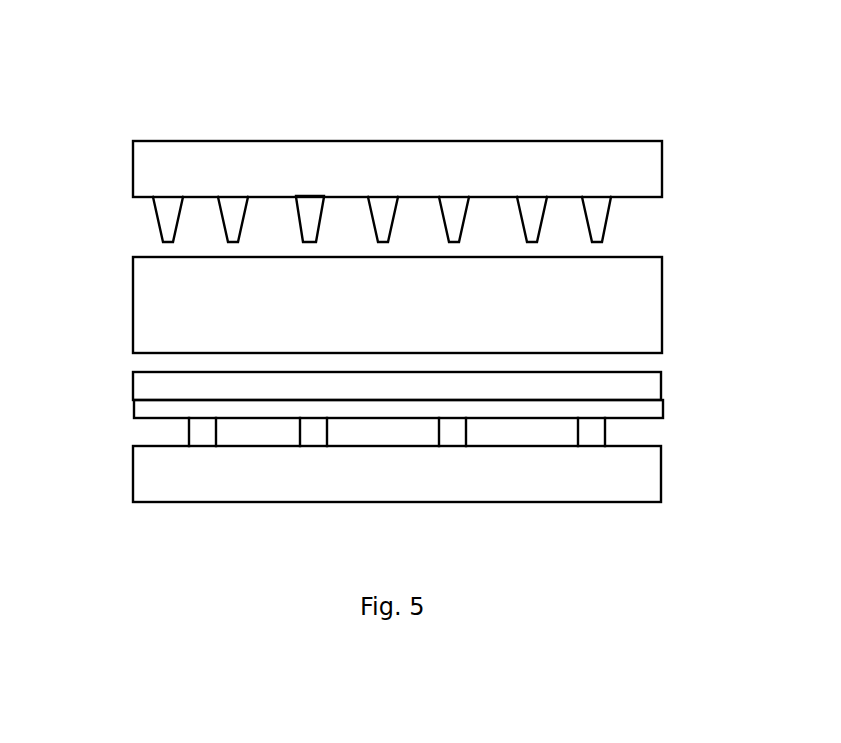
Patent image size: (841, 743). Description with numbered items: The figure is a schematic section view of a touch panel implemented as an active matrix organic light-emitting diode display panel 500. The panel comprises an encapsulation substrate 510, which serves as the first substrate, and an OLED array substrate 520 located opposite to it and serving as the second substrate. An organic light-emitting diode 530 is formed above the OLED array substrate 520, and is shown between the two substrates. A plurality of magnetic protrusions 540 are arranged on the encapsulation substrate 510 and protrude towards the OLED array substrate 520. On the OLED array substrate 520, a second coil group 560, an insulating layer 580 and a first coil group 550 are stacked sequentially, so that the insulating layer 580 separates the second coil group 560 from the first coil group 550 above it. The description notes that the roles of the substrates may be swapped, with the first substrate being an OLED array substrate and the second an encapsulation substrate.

The AMOLED display panel 500 is at (383, 23).
The encapsulation substrate 510 is at (588, 158).
The OLED array substrate 520 is at (455, 480).
The organic light-emitting diode 530 is at (163, 287).
The magnetic protrusions 540 is at (598, 207).
The first coil group 550 is at (638, 385).
The second coil group 560 is at (173, 432).
The insulating layer 580 is at (651, 408).